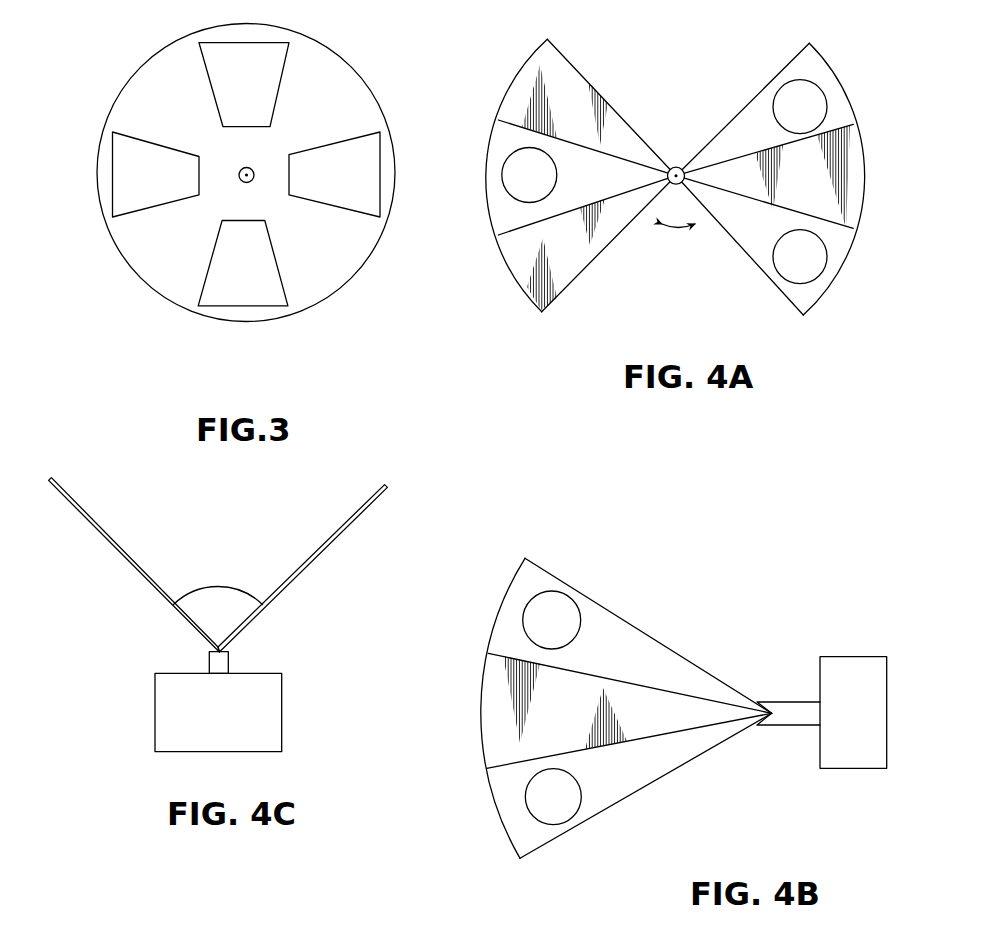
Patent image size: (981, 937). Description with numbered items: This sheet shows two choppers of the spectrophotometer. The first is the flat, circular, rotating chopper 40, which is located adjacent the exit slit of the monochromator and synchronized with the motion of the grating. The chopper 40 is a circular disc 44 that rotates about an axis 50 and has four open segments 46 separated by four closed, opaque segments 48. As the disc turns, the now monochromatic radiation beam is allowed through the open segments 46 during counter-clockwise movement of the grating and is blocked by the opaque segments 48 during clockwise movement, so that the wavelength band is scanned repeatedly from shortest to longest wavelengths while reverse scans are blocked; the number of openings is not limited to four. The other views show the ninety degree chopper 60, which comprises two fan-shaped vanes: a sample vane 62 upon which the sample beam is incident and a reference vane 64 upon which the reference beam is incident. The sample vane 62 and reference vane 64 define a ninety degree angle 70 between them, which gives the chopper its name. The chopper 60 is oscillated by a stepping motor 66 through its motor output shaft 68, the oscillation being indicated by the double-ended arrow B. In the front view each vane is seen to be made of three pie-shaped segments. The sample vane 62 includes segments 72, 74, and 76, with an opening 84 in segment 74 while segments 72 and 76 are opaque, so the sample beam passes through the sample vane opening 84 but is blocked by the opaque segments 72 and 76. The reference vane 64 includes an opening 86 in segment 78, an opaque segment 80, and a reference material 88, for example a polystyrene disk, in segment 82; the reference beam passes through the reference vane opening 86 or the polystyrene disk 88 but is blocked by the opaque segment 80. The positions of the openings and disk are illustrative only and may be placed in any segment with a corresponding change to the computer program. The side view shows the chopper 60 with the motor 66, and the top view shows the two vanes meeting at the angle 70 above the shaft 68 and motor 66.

In FIG. 3, the chopper 40 is at (269, 196).
In FIG. 3, the circular disc 44 is at (137, 70).
In FIG. 3, the open segments 46 is at (130, 173).
In FIG. 3, the closed segments 48 is at (135, 108).
In FIG. 3, the axis 50 is at (242, 168).
In FIG. 4A, the chopper 60 is at (674, 181).
In FIG. 4C, the chopper 60 is at (218, 614).
In FIG. 4B, the chopper 60 is at (659, 709).
In FIG. 4A, the sample vane 62 is at (560, 181).
In FIG. 4C, the sample vane 62 is at (312, 560).
In FIG. 4A, the reference vane 64 is at (789, 181).
In FIG. 4C, the reference vane 64 is at (140, 573).
In FIG. 4B, the reference vane 64 is at (601, 709).
In FIG. 4C, the stepping motor 66 is at (283, 720).
In FIG. 4B, the stepping motor 66 is at (840, 657).
In FIG. 4C, the motor output shaft 68 is at (228, 660).
In FIG. 4B, the motor output shaft 68 is at (792, 702).
In FIG. 4C, the ninety degree angle 70 is at (243, 590).
In FIG. 4A, the segment 72 is at (508, 90).
In FIG. 4A, the segment 74 is at (560, 179).
In FIG. 4A, the segment 76 is at (512, 278).
In FIG. 4A, the segment 78 is at (788, 109).
In FIG. 4B, the segment 78 is at (627, 618).
In FIG. 4A, the opaque segment 80 is at (862, 178).
In FIG. 4B, the opaque segment 80 is at (482, 738).
In FIG. 4A, the segment 82 is at (829, 275).
In FIG. 4B, the segment 82 is at (512, 832).
In FIG. 4A, the opening 84 is at (512, 162).
In FIG. 4A, the opening 86 is at (787, 102).
In FIG. 4B, the opening 86 is at (562, 595).
In FIG. 4A, the reference material 88 is at (818, 265).
In FIG. 4B, the reference material 88 is at (558, 817).
In FIG. 4A, the double-ended arrow B is at (678, 239).